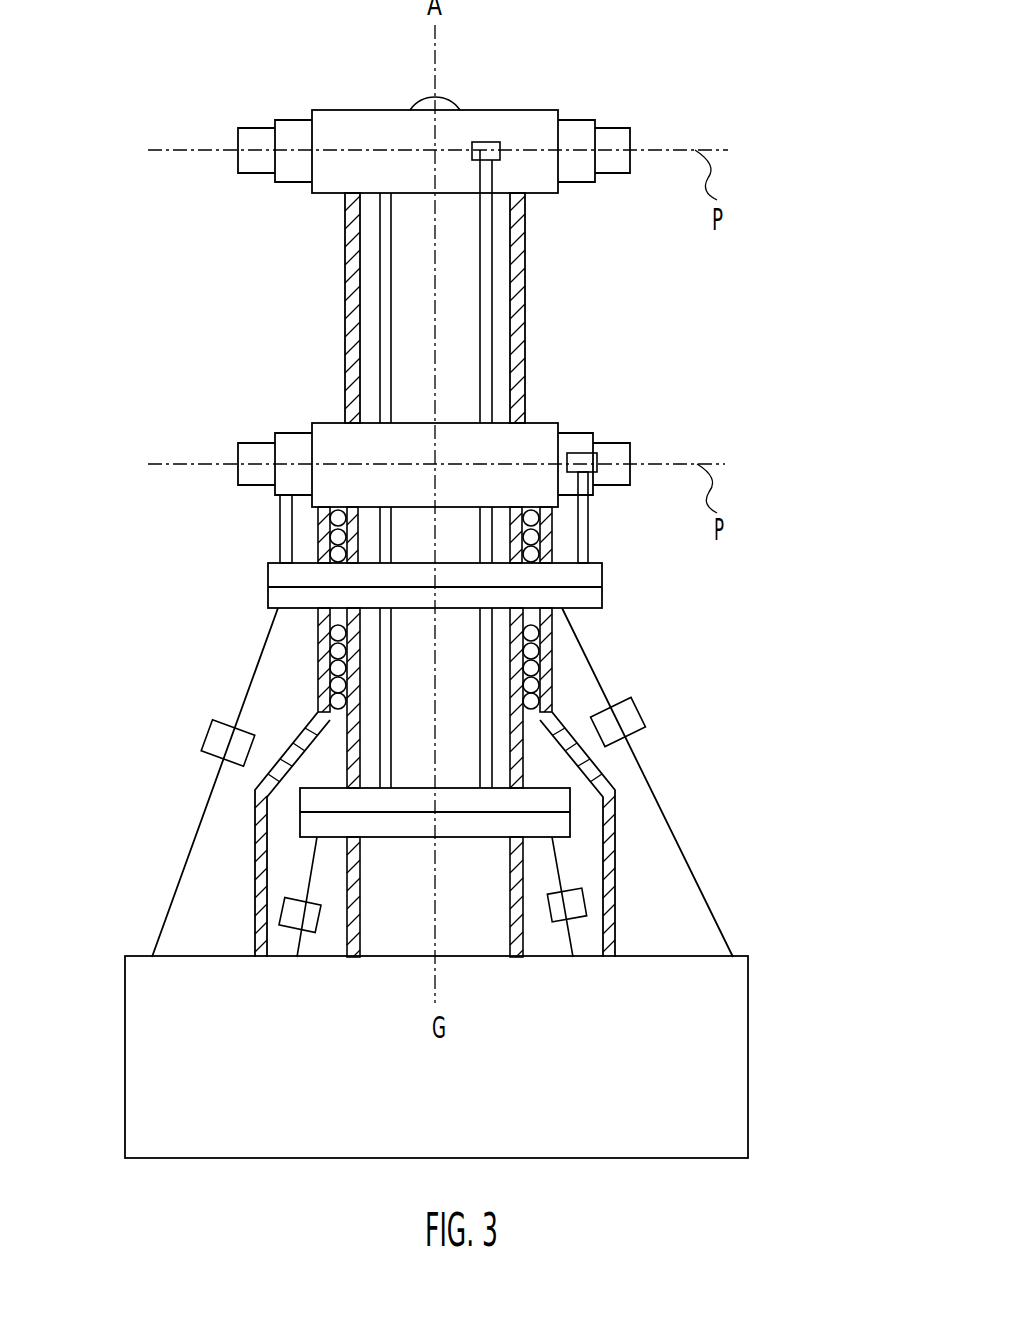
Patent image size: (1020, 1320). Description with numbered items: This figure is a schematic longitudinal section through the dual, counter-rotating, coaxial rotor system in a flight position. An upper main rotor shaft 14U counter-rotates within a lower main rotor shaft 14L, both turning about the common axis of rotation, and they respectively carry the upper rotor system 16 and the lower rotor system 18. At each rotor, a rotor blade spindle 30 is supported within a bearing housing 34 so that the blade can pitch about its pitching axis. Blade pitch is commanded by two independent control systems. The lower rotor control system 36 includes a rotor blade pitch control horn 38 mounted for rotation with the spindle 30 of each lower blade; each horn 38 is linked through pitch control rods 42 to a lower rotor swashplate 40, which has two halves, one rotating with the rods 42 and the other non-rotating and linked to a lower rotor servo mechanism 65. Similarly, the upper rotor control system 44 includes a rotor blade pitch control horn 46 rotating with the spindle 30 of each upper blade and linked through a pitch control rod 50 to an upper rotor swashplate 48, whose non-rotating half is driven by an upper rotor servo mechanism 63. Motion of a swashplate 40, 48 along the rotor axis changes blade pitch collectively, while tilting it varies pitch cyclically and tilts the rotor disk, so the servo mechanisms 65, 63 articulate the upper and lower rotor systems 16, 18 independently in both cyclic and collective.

The upper main rotor shaft 14U is at (527, 273).
The lower main rotor shaft 14L is at (617, 803).
The upper rotor system 16 is at (633, 100).
The lower rotor system 18 is at (713, 448).
The rotor blade spindle 30 is at (580, 138).
The bearing housing 34 is at (345, 120).
The lower rotor control system 36 is at (612, 590).
The rotor blade pitch control horn 38 is at (593, 462).
The lower rotor swashplate 40 is at (585, 608).
The pitch control rods 42 is at (588, 537).
The upper rotor control system 44 is at (298, 812).
The rotor blade pitch control horn 46 is at (493, 143).
The upper rotor swashplate 48 is at (318, 826).
The pitch control rod 50 is at (492, 347).
The upper rotor servo mechanism 63 is at (297, 943).
The lower rotor servo mechanism 65 is at (188, 860).